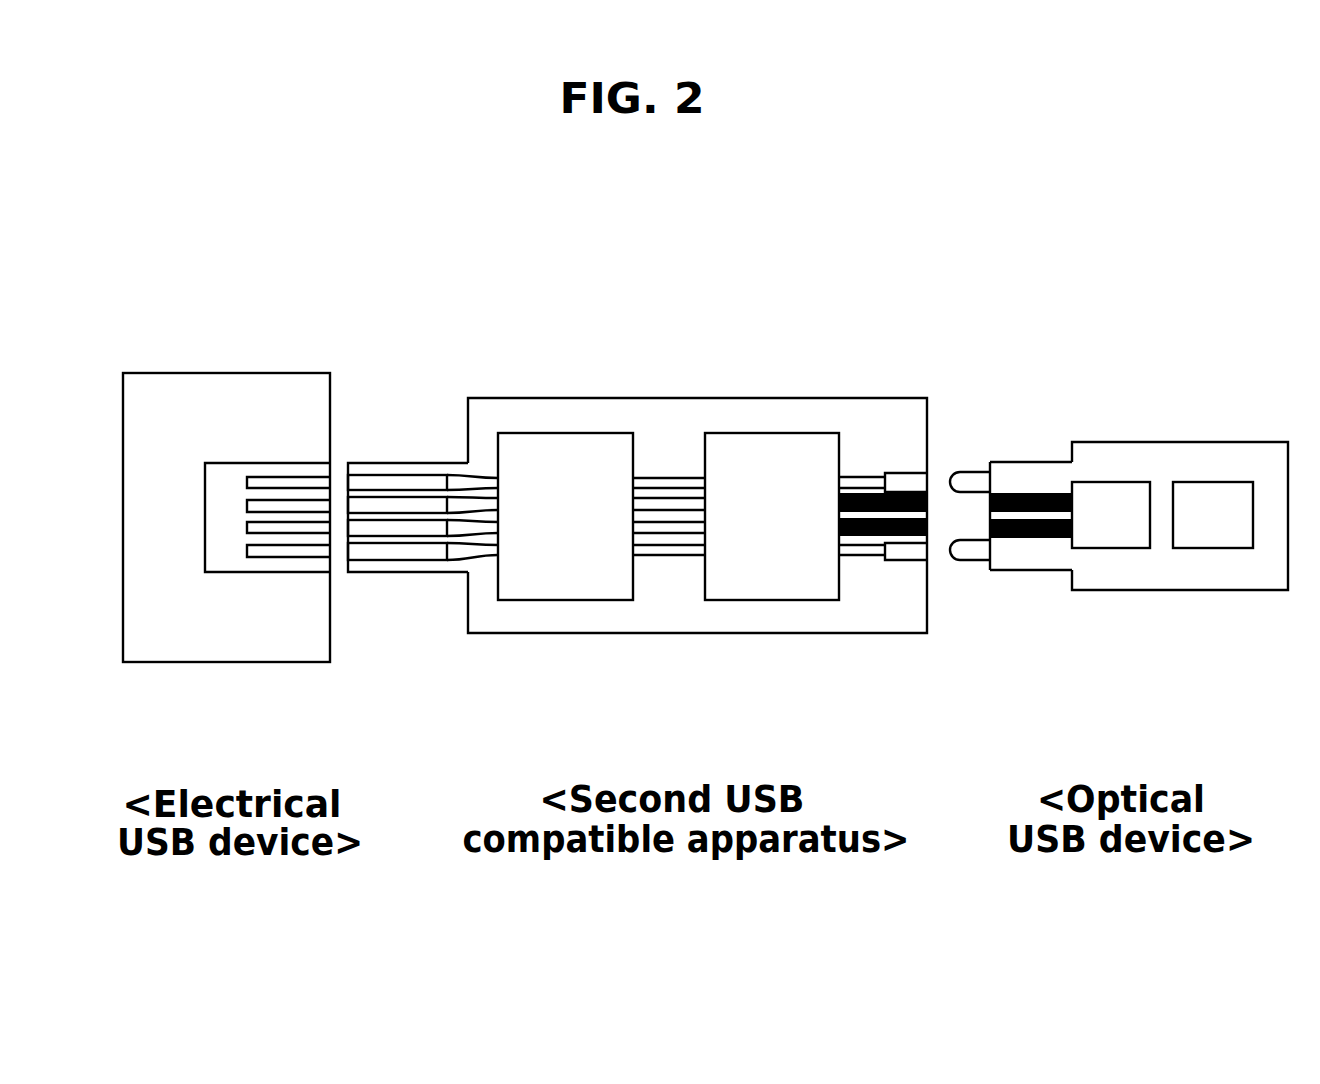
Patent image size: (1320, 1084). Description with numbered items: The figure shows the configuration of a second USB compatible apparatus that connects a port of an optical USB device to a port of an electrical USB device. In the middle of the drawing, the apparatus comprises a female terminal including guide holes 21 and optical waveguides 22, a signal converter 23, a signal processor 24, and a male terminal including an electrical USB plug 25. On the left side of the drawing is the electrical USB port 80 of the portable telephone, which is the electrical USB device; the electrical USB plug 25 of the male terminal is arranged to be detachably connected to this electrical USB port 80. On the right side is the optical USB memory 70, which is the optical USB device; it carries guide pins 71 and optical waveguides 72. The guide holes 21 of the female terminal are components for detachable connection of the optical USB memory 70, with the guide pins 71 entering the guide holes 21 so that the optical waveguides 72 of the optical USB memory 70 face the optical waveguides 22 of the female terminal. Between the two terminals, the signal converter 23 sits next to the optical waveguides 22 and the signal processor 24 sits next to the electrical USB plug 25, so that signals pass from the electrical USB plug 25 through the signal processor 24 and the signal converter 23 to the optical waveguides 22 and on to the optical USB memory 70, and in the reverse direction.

The electrical USB port of the portable telephone 80 is at (229, 490).
The electrical USB plug 25 is at (392, 552).
The signal processor 24 is at (554, 450).
The signal converter 23 is at (770, 450).
The guide holes 21 is at (900, 478).
The optical waveguides 22 is at (865, 537).
The guide pins 71 is at (973, 553).
The optical waveguides 72 is at (1033, 493).
The optical USB memory 70 is at (1162, 590).